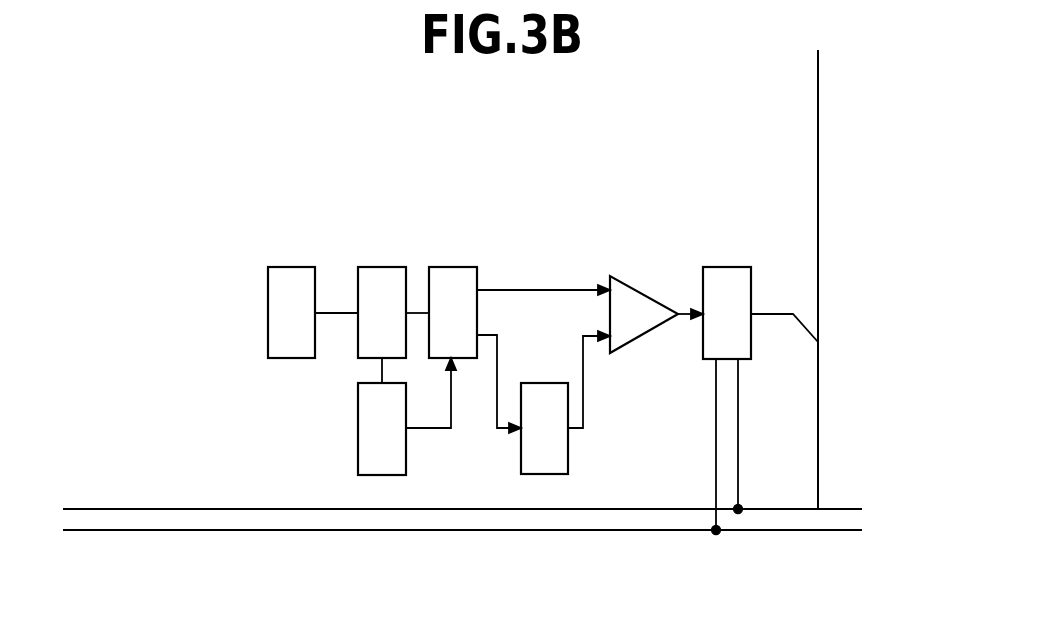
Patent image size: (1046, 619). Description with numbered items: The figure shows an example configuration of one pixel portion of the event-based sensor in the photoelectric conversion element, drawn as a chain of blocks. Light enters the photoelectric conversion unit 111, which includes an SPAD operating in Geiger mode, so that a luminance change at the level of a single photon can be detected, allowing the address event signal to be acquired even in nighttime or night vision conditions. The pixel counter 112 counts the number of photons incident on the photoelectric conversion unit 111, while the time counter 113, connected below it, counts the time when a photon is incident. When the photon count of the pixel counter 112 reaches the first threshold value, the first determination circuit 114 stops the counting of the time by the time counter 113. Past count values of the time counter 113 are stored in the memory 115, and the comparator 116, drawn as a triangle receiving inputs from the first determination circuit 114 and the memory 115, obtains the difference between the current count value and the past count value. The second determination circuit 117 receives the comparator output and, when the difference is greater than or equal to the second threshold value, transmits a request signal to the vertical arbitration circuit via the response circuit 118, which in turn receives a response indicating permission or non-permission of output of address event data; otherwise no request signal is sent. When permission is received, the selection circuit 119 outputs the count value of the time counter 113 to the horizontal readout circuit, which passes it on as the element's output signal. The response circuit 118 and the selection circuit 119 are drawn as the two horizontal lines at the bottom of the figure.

The photoelectric conversion unit 111 is at (292, 267).
The pixel counter 112 is at (386, 267).
The time counter 113 is at (358, 428).
The first determination circuit 114 is at (454, 267).
The memory 115 is at (569, 452).
The comparator 116 is at (637, 287).
The second determination circuit 117 is at (728, 267).
The response circuit 118 is at (842, 509).
The selection circuit 119 is at (842, 530).